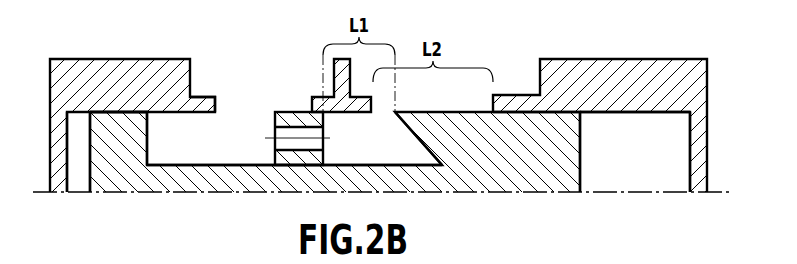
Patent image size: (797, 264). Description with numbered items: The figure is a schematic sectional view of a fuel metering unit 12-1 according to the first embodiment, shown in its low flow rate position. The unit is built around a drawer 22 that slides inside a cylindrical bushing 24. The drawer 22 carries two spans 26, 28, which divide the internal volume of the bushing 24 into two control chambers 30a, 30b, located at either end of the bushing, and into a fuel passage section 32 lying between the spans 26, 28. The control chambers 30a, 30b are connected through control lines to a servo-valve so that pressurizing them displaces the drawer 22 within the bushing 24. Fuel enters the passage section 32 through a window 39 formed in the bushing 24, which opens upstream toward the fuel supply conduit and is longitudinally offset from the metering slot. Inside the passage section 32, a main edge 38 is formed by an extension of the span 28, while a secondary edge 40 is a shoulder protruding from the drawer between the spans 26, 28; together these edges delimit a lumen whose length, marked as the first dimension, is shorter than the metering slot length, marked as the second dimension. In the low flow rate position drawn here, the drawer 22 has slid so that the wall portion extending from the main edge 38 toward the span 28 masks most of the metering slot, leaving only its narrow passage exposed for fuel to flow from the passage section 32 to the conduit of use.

The fuel metering unit 12-1 is at (403, 104).
The drawer 22 is at (364, 160).
The bushing 24 is at (577, 80).
The span 26 is at (128, 137).
The span 28 is at (578, 137).
The control chamber 30a is at (78, 177).
The control chamber 30b is at (640, 177).
The fuel passage section 32 is at (209, 150).
The main edge 38 is at (357, 133).
The window 39 is at (256, 130).
The secondary edge 40 is at (327, 118).